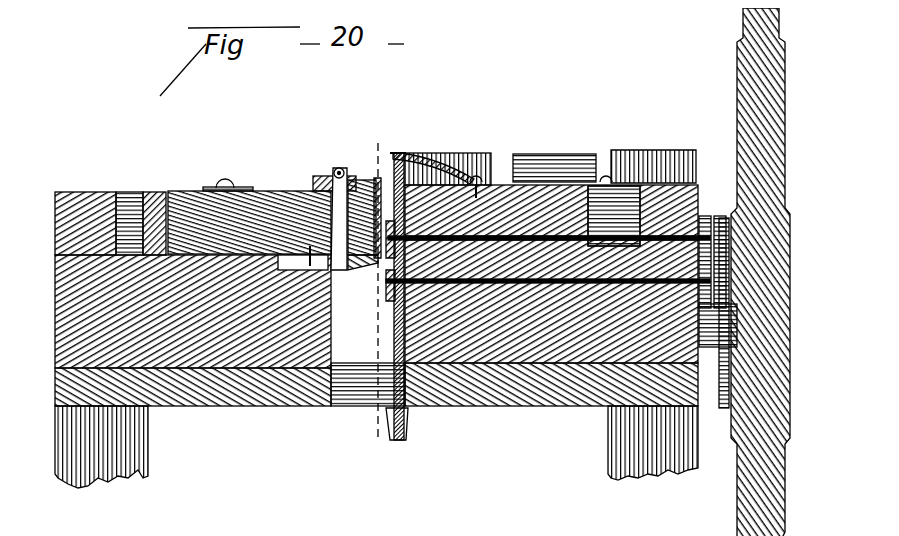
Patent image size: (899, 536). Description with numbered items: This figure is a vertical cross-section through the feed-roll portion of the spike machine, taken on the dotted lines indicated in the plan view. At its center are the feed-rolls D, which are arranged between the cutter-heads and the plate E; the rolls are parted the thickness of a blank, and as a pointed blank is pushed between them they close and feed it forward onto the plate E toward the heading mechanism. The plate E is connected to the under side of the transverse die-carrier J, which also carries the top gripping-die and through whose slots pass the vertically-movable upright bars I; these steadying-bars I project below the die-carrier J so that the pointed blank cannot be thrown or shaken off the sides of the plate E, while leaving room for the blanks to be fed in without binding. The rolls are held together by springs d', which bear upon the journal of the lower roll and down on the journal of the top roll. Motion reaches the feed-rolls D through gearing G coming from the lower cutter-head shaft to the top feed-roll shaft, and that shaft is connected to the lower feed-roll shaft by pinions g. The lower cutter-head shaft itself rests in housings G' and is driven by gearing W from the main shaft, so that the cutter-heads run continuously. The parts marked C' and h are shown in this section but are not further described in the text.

The gearing W is at (747, 272).
The upright bars I is at (334, 163).
The transverse die-carrier J is at (250, 192).
The springs d' is at (407, 286).
The housings G' is at (444, 165).
The block C' is at (648, 156).
The pinions g is at (718, 269).
The wedge h is at (360, 270).
The plate E is at (352, 256).
The feed-rolls D is at (388, 243).
The gearing G is at (722, 325).